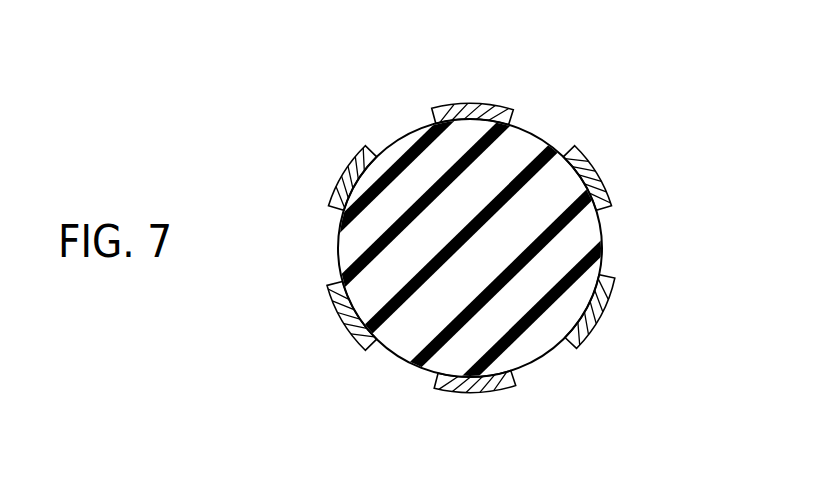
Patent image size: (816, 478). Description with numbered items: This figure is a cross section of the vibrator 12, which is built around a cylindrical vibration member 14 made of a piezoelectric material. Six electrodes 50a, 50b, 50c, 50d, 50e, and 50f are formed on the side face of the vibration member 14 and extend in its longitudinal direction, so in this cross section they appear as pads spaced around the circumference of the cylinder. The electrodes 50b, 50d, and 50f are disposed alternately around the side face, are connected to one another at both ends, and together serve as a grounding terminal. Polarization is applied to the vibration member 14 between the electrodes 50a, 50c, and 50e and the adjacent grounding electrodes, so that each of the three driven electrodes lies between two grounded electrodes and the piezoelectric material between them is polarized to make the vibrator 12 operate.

The vibrator 12 is at (444, 252).
The vibration member 14 is at (588, 231).
The electrode 50a is at (473, 102).
The electrode 50b is at (594, 165).
The electrode 50c is at (603, 318).
The electrode 50d is at (467, 395).
The electrode 50e is at (352, 323).
The electrode 50f is at (340, 176).